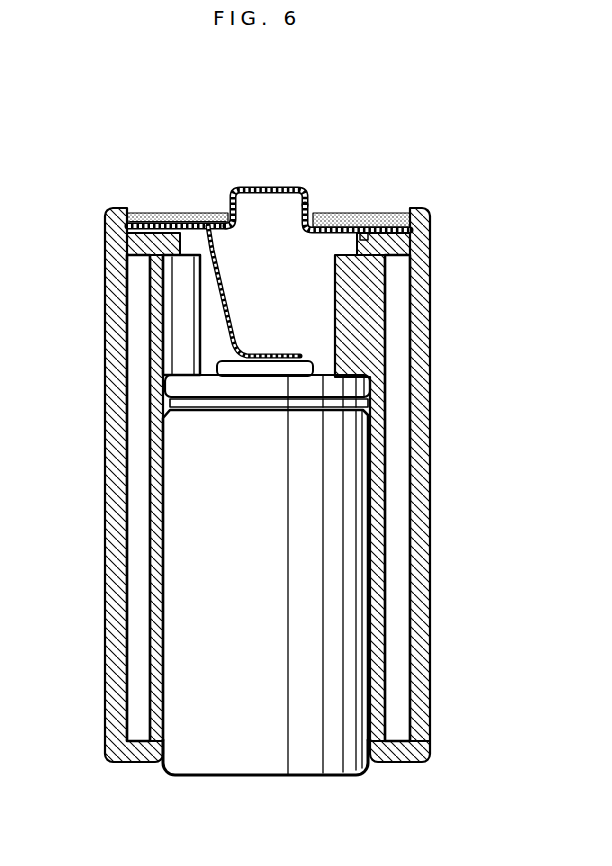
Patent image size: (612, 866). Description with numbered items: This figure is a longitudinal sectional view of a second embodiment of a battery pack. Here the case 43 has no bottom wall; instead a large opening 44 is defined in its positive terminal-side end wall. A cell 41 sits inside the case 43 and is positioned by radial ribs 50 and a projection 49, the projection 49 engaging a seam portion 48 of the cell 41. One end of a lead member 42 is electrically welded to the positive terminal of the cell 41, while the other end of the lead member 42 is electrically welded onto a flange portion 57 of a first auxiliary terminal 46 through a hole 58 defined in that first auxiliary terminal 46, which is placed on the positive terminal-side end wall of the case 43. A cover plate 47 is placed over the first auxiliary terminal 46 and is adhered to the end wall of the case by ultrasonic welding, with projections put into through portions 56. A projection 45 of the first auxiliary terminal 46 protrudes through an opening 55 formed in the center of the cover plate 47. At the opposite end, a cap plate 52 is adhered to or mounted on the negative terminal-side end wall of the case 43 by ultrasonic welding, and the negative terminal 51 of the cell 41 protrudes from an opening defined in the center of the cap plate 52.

The cell 41 is at (362, 540).
The lead member 42 is at (216, 289).
The case 43 is at (423, 373).
The large opening 44 is at (168, 245).
The projection 45 is at (298, 192).
The first auxiliary terminal 46 is at (259, 185).
The cover plate 47 is at (368, 218).
The seam portion 48 is at (262, 404).
The projection 49 is at (377, 402).
The radial ribs 50 is at (178, 347).
The negative terminal 51 is at (320, 768).
The cap plate 52 is at (407, 752).
The opening 55 is at (226, 218).
The through portions 56 is at (363, 229).
The flange portion 57 is at (145, 220).
The hole 58 is at (177, 224).